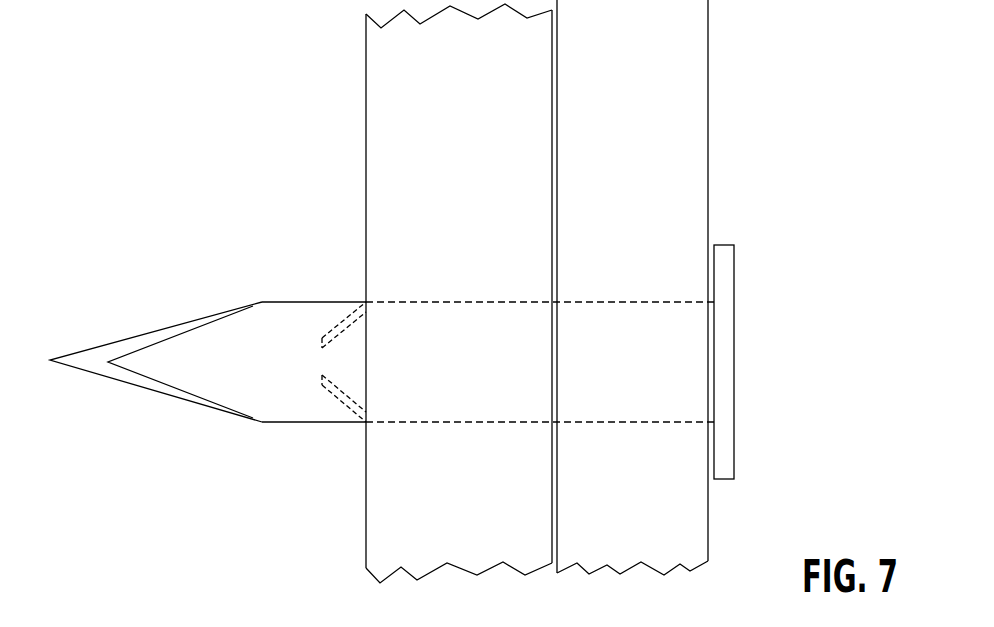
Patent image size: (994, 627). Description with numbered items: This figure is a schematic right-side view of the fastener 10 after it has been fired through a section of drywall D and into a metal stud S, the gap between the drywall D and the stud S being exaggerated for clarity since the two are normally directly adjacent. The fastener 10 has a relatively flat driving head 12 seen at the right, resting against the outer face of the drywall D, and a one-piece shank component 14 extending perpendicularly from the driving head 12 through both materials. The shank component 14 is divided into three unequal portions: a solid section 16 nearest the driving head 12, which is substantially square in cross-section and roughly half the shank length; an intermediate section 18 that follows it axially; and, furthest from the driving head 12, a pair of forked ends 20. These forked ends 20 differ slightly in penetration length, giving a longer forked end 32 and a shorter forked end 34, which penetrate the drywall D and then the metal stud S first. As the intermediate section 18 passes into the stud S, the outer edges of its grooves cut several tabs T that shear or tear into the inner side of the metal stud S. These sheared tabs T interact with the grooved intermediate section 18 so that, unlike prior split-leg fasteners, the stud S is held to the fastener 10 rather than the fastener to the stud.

The fastener 10 is at (779, 361).
The driving head 12 is at (727, 310).
The shank component 14 is at (440, 272).
The solid section 16 is at (553, 367).
The intermediate section 18 is at (306, 373).
The forked ends 20 is at (208, 352).
The longer forked end 32 is at (93, 349).
The shorter forked end 34 is at (204, 374).
The tabs T is at (347, 317).
The metal stud S is at (459, 293).
The drywall D is at (632, 287).